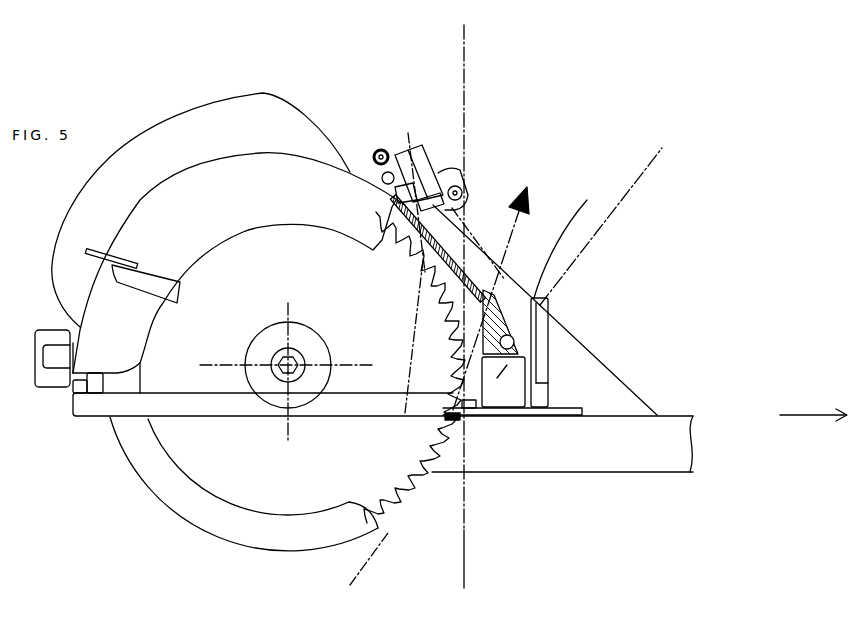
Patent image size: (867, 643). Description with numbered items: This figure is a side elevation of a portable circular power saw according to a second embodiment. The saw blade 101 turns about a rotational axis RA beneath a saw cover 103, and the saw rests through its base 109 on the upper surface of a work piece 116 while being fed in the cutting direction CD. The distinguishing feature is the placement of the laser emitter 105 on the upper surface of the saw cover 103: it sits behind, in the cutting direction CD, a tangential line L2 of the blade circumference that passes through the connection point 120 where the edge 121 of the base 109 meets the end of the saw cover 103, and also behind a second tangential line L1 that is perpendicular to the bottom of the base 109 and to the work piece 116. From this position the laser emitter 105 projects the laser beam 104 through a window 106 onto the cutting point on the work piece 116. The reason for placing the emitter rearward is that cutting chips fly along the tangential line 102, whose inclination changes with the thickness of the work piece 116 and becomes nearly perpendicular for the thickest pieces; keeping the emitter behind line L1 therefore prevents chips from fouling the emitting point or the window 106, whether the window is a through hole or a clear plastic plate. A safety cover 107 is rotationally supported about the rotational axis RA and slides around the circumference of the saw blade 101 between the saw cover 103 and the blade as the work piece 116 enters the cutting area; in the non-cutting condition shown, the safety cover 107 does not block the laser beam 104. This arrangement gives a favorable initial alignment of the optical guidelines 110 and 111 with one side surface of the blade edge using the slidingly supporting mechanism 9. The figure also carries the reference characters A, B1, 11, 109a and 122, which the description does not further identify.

The slidingly supporting mechanism 9 is at (421, 154).
The saw blade 11 is at (419, 367).
The saw blade 101 is at (398, 508).
The tangential line 102 is at (510, 240).
The saw cover 103 is at (317, 187).
The laser beam 104 is at (417, 327).
The laser emitter 105 is at (428, 156).
The window 106 is at (452, 212).
The safety cover 107 is at (178, 497).
The base 109 is at (90, 410).
The base plate edge 109a is at (503, 420).
The optical guideline 110 is at (617, 418).
The optical guideline 111 is at (470, 422).
The work piece 116 is at (663, 460).
The connection point 120 is at (602, 213).
The edge of the base 121 is at (563, 351).
The pivot point 122 is at (436, 422).
The pivot axis A is at (453, 424).
The bolt B1 is at (368, 159).
The rotational axis RA is at (297, 343).
The tangential line L1 is at (464, 68).
The tangential line L2 is at (650, 165).
The cutting direction CD is at (820, 422).